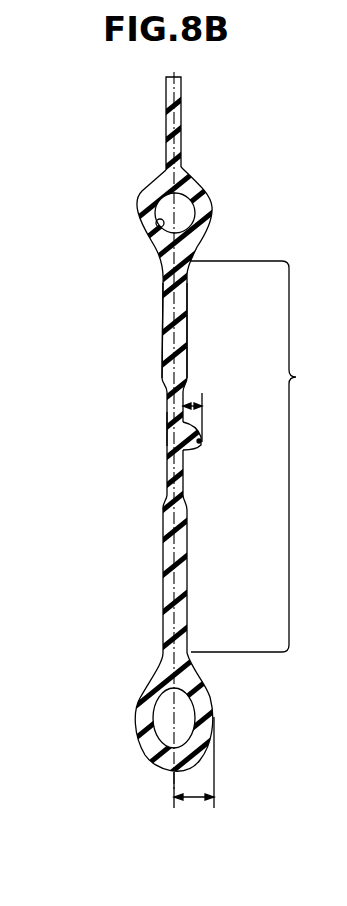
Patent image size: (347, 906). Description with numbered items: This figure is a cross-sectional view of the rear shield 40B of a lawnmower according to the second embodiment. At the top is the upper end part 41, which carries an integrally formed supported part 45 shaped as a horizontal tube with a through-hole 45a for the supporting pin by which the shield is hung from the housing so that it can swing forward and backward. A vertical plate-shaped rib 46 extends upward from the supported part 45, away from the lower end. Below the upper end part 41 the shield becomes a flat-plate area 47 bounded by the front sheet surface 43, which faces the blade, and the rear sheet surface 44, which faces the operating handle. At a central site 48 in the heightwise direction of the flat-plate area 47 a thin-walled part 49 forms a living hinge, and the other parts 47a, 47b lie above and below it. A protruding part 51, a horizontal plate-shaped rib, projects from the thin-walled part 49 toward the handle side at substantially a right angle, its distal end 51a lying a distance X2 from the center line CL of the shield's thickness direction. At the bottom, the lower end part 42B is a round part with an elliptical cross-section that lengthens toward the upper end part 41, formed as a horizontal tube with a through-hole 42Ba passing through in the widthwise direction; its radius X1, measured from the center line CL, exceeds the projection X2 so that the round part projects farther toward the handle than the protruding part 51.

The rear shield 40B is at (126, 123).
The rib 46 is at (166, 130).
The upper end part 41 is at (141, 199).
The supported part 45 is at (145, 210).
The through-hole 45a is at (155, 227).
The front sheet surface 43 is at (162, 320).
The other part 47a is at (167, 352).
The rear sheet surface 44 is at (188, 302).
The central site 48 is at (157, 413).
The thin-walled part 49 is at (167, 428).
The protruding part 51 is at (200, 448).
The distal end 51a is at (203, 441).
The other part 47b is at (163, 558).
The lower end part 42B is at (137, 713).
The through-hole 42Ba is at (158, 722).
The center line CL is at (173, 785).
The flat-plate area 47 is at (258, 456).
The amount of projection X2 is at (187, 405).
The radius X1 is at (194, 772).